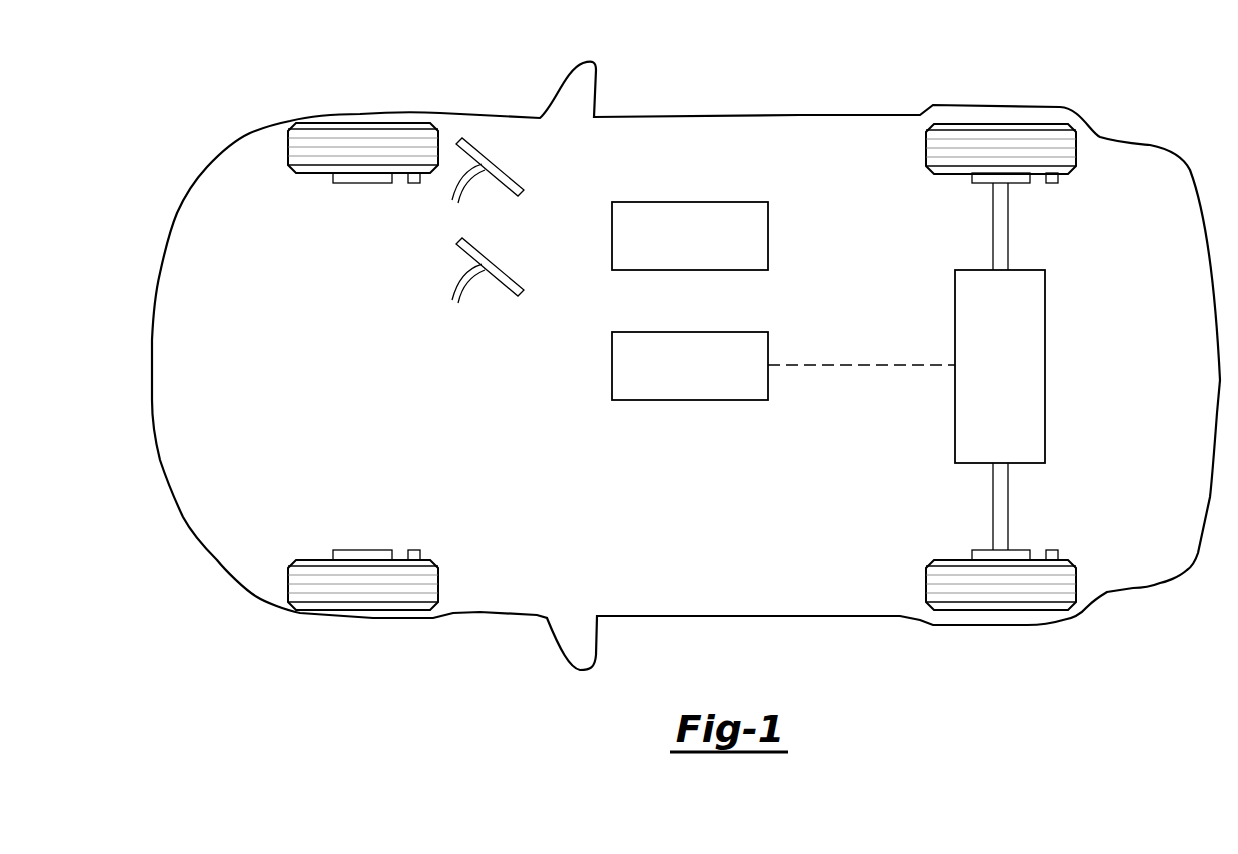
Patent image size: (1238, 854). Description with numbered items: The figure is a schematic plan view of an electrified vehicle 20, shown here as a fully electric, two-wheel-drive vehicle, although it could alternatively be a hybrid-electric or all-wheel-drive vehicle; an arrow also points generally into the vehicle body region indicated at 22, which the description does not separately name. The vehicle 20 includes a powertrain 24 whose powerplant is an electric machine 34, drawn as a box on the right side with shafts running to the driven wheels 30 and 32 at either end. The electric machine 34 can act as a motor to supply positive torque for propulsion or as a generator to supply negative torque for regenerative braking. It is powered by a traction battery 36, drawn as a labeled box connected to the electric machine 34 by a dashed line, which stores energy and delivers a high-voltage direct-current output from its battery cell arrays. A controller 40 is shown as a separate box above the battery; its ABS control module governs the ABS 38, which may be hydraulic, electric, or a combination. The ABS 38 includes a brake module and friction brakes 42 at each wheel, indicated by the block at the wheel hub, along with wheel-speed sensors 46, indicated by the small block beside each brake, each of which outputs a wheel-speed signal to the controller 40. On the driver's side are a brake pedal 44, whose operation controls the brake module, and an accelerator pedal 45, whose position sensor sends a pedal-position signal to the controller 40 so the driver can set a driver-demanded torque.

The electrified vehicle 20 is at (752, 116).
The front wheels 22 is at (278, 305).
The powertrain 24 is at (1049, 366).
The driven wheel 30 is at (1000, 124).
The driven wheel 32 is at (1000, 611).
The electric machine 34 is at (986, 369).
The traction battery 36 is at (770, 345).
The ABS 38 is at (1052, 235).
The controller 40 is at (690, 201).
The friction brake 42 is at (977, 185).
The brake pedal 44 is at (516, 276).
The accelerator pedal 45 is at (516, 176).
The wheel-speed sensor 46 is at (1053, 185).